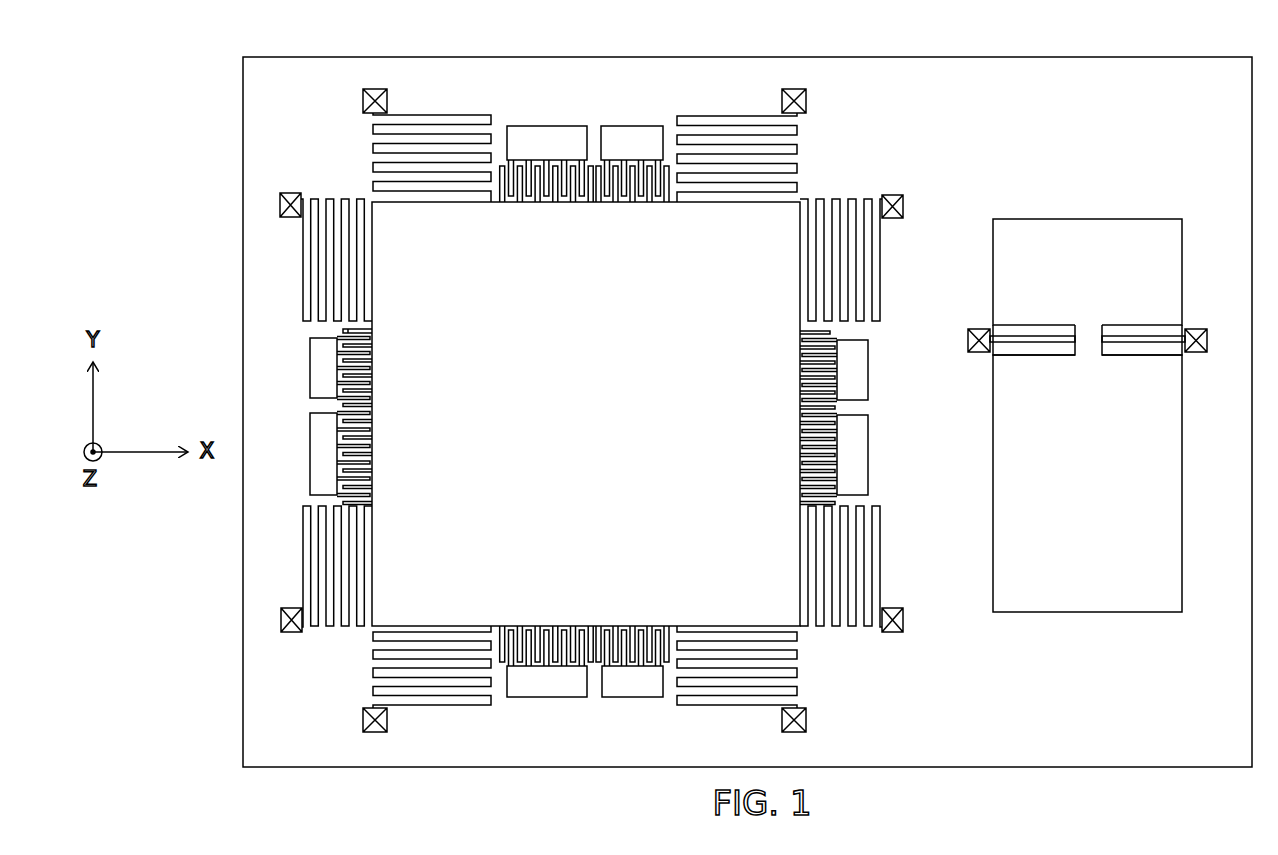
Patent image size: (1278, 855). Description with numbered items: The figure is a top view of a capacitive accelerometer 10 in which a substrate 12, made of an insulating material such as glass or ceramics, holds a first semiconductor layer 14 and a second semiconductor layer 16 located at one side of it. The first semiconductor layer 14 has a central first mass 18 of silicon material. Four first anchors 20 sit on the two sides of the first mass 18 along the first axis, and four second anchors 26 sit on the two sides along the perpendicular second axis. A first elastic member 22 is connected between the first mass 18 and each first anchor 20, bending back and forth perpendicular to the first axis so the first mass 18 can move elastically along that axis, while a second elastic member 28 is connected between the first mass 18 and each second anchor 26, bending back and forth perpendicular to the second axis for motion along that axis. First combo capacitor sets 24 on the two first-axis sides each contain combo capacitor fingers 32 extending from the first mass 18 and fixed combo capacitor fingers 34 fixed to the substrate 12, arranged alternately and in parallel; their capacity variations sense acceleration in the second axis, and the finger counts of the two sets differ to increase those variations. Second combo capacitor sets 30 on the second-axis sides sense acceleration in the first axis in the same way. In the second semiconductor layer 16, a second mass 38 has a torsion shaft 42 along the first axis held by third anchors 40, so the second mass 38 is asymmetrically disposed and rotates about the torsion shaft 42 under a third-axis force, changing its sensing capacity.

The capacitive accelerometer 10 is at (213, 87).
The substrate 12 is at (290, 58).
The first semiconductor layer 14 is at (862, 142).
The second semiconductor layer 16 is at (1098, 180).
The first mass 18 is at (578, 416).
The first anchor 20 is at (292, 194).
The first elastic member 22 is at (303, 286).
The first combo capacitor set 24 is at (205, 322).
The second anchor 26 is at (384, 90).
The second elastic member 28 is at (468, 116).
The second combo capacitor set 30 is at (546, 150).
The combo capacitor finger 32 is at (343, 331).
The fixed combo capacitor finger 34 is at (337, 340).
The second mass 38 is at (1155, 219).
The third anchor 40 is at (979, 329).
The torsion shaft 42 is at (1150, 344).